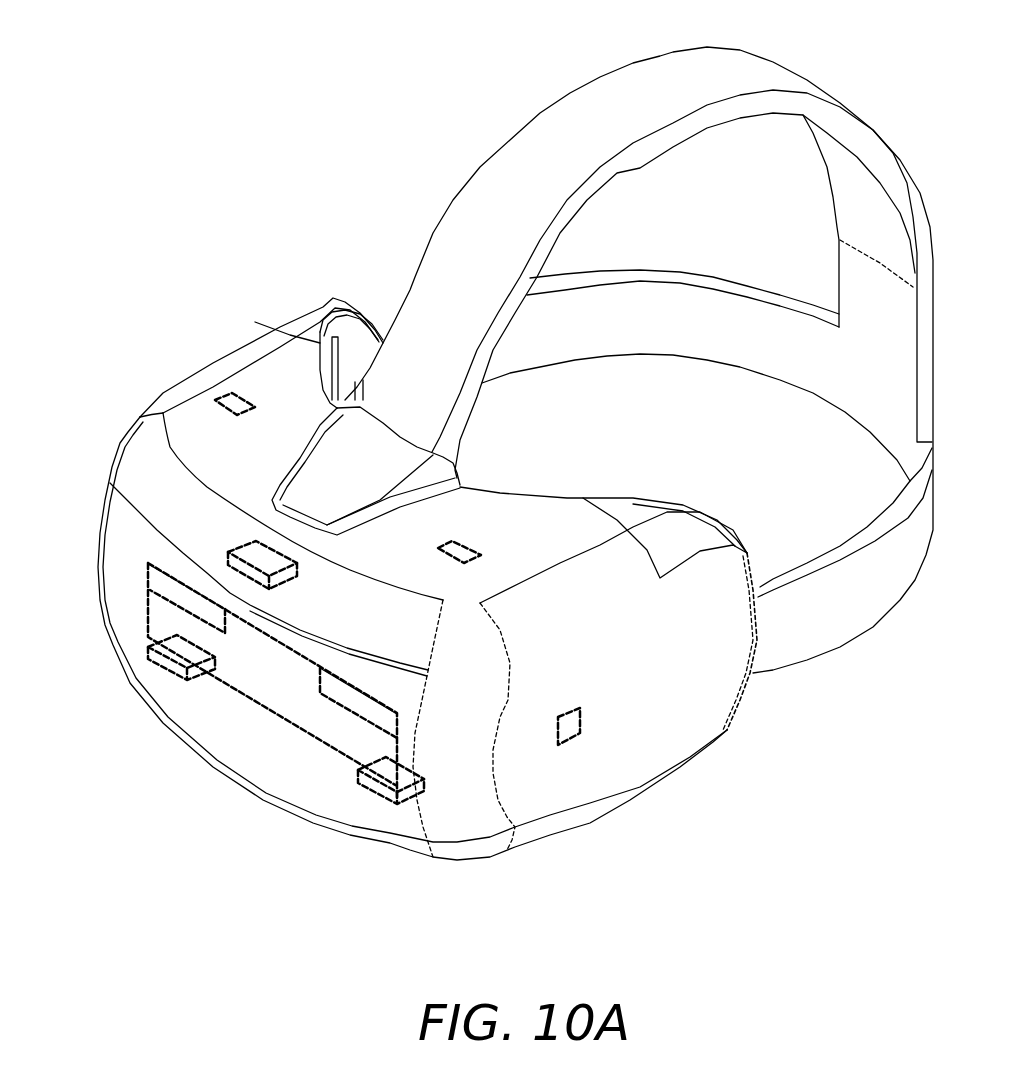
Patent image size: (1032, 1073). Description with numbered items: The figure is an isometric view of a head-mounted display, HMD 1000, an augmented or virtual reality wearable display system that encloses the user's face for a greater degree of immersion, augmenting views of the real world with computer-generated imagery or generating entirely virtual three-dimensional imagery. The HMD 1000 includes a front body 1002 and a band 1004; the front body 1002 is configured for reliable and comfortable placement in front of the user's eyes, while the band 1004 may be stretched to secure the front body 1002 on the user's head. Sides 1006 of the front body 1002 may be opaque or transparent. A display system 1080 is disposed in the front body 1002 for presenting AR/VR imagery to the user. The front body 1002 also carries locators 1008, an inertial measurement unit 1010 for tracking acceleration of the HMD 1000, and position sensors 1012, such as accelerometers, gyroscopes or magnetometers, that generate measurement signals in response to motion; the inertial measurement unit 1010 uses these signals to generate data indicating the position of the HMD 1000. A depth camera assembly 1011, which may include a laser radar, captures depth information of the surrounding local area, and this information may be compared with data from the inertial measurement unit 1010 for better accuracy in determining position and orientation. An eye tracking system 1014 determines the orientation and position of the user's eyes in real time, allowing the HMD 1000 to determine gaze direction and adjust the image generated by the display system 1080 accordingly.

The HMD 1000 is at (298, 218).
The front body 1002 is at (118, 435).
The band 1004 is at (707, 280).
The sides 1006 is at (665, 688).
The locators 1008 is at (235, 397).
The inertial measurement unit (IMU) 1010 is at (163, 653).
The depth camera assembly (DCA) 1011 is at (259, 557).
The position sensors 1012 is at (370, 793).
The eye tracking system 1014 is at (167, 578).
The display system 1080 is at (290, 683).